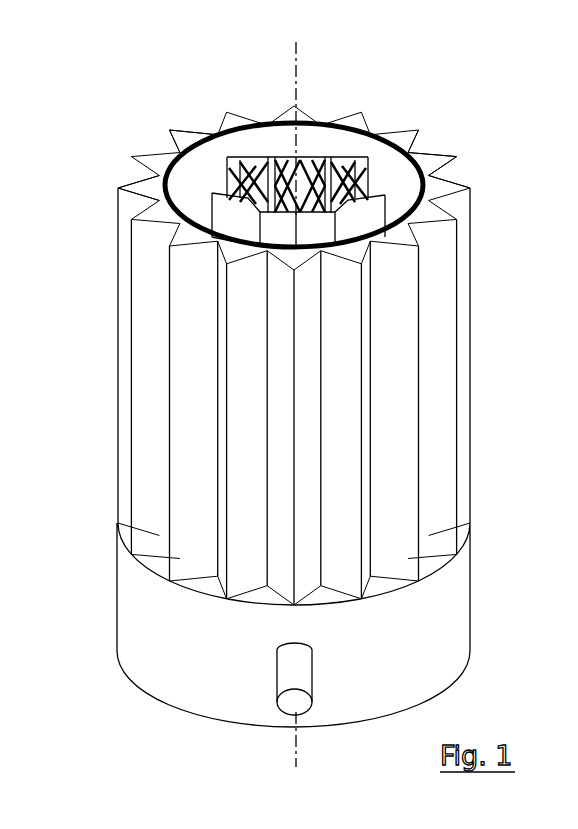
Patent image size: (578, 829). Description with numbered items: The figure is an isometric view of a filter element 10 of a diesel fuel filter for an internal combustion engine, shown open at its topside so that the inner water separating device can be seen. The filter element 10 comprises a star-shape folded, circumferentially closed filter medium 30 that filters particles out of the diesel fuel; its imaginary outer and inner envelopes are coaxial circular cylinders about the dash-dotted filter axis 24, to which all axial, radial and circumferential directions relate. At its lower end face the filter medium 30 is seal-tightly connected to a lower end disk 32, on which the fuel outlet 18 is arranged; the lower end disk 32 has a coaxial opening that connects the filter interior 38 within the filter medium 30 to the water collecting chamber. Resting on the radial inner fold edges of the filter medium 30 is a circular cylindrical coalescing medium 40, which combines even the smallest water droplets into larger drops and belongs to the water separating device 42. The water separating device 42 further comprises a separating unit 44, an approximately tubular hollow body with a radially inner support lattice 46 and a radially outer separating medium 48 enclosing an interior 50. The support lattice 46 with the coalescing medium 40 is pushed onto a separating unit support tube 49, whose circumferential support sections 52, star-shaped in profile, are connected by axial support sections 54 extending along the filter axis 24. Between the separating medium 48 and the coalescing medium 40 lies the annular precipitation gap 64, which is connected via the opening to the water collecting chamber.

The filter element 10 is at (289, 404).
The fuel outlet 18 is at (278, 680).
The filter axis 24 is at (296, 85).
The filter medium 30 is at (119, 330).
The lower end disk 32 is at (153, 562).
The filter interior 38 is at (185, 180).
The coalescing medium 40 is at (213, 129).
The water separating device 42 is at (316, 150).
The separating unit 44 is at (366, 179).
The support lattice 46 is at (358, 200).
The separating medium 48 is at (225, 208).
The separating unit support tube 49 is at (276, 153).
The interior of the separating unit 50 is at (348, 147).
The circumferential support sections 52 is at (361, 173).
The axial support sections 54 is at (232, 170).
The precipitation gap 64 is at (402, 188).